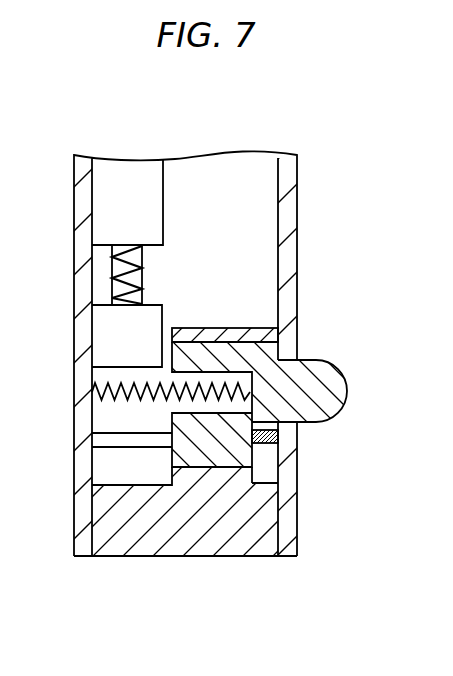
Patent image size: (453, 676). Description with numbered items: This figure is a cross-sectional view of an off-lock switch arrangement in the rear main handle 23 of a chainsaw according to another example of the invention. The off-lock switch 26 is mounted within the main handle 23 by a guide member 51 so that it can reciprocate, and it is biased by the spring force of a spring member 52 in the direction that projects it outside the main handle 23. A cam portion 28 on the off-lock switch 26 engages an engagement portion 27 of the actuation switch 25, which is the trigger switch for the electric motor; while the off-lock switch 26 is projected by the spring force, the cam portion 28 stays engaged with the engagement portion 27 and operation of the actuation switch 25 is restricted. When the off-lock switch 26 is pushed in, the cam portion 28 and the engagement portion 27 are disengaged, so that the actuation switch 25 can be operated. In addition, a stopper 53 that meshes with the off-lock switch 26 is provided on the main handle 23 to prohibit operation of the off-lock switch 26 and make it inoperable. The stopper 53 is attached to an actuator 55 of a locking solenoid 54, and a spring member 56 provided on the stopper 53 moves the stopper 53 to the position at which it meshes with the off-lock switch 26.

The main handle 23 is at (288, 268).
The actuation switch 25 is at (243, 528).
The off-lock switch 26 is at (315, 392).
The engagement portion 27 is at (210, 475).
The cam portion 28 is at (212, 458).
The guide member 51 is at (212, 333).
The spring member 52 is at (120, 403).
The stopper 53 is at (123, 337).
The locking solenoid 54 is at (127, 197).
The actuator 55 is at (117, 283).
The spring member 56 is at (113, 255).